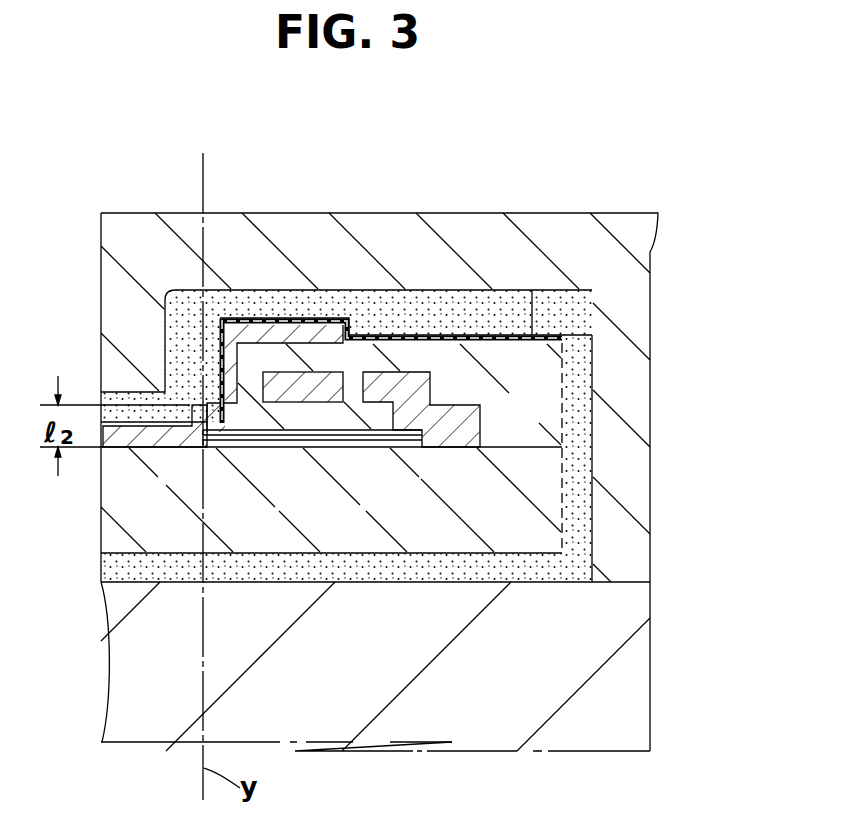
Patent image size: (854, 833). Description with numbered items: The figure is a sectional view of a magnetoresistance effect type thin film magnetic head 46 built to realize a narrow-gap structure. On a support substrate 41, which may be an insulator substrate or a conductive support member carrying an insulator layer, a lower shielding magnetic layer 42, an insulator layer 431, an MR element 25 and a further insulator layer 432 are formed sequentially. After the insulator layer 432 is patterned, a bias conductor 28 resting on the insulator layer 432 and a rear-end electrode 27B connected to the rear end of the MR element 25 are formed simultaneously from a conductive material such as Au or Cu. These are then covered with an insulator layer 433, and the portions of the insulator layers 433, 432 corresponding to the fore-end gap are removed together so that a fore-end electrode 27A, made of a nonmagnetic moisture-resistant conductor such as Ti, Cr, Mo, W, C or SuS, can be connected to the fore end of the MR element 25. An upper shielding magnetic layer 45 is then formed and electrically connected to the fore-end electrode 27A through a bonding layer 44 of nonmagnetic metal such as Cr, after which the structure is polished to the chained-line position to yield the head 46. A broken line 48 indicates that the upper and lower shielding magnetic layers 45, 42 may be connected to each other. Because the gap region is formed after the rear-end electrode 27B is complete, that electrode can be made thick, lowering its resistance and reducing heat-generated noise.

The thin film magnetic head 46 is at (110, 141).
The upper shielding magnetic layer 45 is at (178, 290).
The insulator layer 433 is at (272, 360).
The bias conductor 28 is at (312, 372).
The bonding layer 44 is at (530, 330).
The rear-end electrode 27B is at (480, 430).
The broken line 48 is at (578, 471).
The fore-end electrode 27A is at (182, 450).
The MR element 25 is at (297, 448).
The insulator layer 432 is at (347, 420).
The insulator layer 431 is at (348, 583).
The lower shielding magnetic layer 42 is at (487, 572).
The support substrate 41 is at (637, 717).